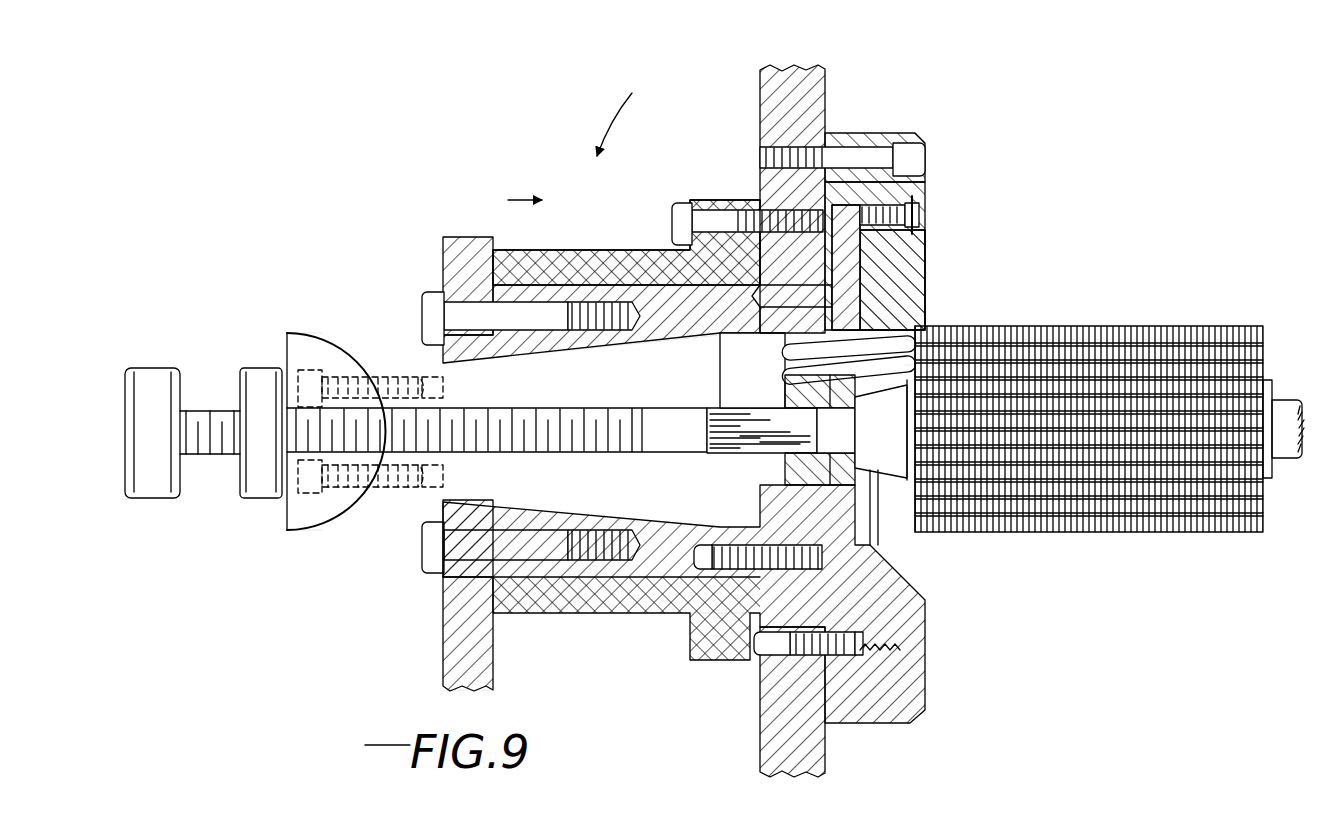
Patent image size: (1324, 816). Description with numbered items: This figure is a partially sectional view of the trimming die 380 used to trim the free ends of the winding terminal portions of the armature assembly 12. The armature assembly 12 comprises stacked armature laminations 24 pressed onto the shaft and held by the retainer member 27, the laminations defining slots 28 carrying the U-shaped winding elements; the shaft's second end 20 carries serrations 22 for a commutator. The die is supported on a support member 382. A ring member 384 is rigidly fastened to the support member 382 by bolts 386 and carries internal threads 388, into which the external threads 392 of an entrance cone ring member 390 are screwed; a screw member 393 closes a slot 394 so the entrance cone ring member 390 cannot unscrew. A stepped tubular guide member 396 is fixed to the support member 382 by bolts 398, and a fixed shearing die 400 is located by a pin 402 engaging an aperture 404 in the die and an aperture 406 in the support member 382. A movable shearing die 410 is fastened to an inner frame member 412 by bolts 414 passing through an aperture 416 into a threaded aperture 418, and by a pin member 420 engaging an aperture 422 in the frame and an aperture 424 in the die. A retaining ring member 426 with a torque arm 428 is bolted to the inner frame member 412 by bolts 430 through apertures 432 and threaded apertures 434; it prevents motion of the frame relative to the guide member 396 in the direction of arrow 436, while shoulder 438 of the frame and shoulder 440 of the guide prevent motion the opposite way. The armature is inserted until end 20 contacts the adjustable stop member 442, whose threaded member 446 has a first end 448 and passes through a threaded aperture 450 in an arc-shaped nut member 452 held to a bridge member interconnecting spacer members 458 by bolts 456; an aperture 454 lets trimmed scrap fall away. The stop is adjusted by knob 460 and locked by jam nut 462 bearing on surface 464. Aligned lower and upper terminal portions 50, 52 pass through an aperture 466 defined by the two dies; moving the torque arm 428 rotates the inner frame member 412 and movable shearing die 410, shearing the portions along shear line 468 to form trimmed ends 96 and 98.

The armature assembly 12 is at (1112, 296).
The second end 20 is at (692, 438).
The serrations 22 is at (735, 437).
The armature laminations 24 is at (1240, 326).
The retainer member 27 is at (905, 500).
The slots 28 is at (1155, 350).
The lower terminal portion 50 is at (905, 370).
The upper terminal portion 52 is at (920, 350).
The trimmed end 96 is at (900, 350).
The trimmed end 98 is at (880, 338).
The trimming die 380 is at (611, 121).
The support member 382 is at (812, 98).
The ring member 384 is at (865, 140).
The bolts 386 is at (915, 158).
The internal threads 388 is at (925, 190).
The entrance cone ring member 390 is at (926, 262).
The external threads 392 is at (930, 210).
The screw member 393 is at (930, 222).
The slot 394 is at (930, 238).
The stepped tubular guide member 396 is at (625, 265).
The bolts 398 is at (685, 230).
The fixed shearing die 400 is at (843, 617).
The pin 402 is at (833, 650).
The aperture 404 is at (860, 645).
The aperture 406 is at (780, 635).
The movable shearing die 410 is at (780, 207).
The inner frame member 412 is at (653, 560).
The bolts 414 is at (690, 638).
The aperture 416 is at (740, 640).
The threaded aperture 418 is at (687, 590).
The pin member 420 is at (700, 250).
The aperture 422 is at (780, 333).
The aperture 424 is at (790, 352).
The retaining ring member 426 is at (455, 280).
The torque arm 428 is at (455, 647).
The bolts 430 is at (425, 300).
The apertures 432 is at (472, 262).
The threaded apertures 434 is at (590, 300).
The arrow 436 is at (528, 176).
The shoulder 438 is at (765, 265).
The shoulder 440 is at (737, 287).
The adjustable stop member 442 is at (447, 500).
The threaded member 446 is at (400, 460).
The first end 448 is at (608, 408).
The threaded aperture 450 is at (385, 400).
The arc-shaped nut member 452 is at (335, 360).
The aperture 454 is at (557, 357).
The bolts 456 is at (300, 385).
The spacer members 458 is at (425, 372).
The knob 460 is at (150, 385).
The jam nut 462 is at (262, 482).
The surface 464 is at (287, 515).
The aperture 466 is at (810, 388).
The shear line 468 is at (800, 382).